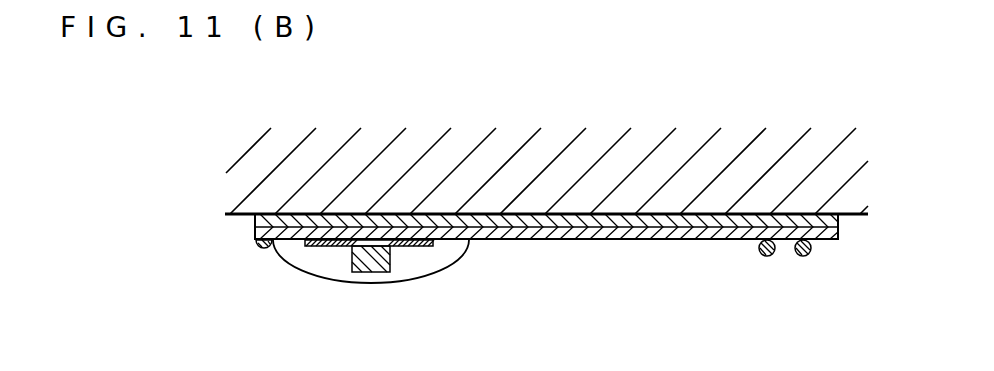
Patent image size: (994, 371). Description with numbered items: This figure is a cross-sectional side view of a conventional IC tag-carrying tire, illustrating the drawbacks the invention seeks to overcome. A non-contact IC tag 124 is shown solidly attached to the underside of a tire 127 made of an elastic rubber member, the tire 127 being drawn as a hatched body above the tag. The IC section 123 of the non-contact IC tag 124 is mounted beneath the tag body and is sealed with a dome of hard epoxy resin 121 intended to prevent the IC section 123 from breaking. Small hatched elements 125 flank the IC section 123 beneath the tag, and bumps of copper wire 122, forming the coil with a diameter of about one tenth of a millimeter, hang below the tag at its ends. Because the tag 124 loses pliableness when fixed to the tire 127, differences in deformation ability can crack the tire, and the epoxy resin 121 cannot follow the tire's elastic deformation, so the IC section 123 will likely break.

The epoxy resin 121 is at (453, 250).
The copper wire 122 is at (263, 253).
The IC section 123 is at (370, 267).
The non-contact IC tag 124 is at (578, 252).
The electrode / wiring pattern 125 is at (323, 247).
The tire 127 is at (468, 178).